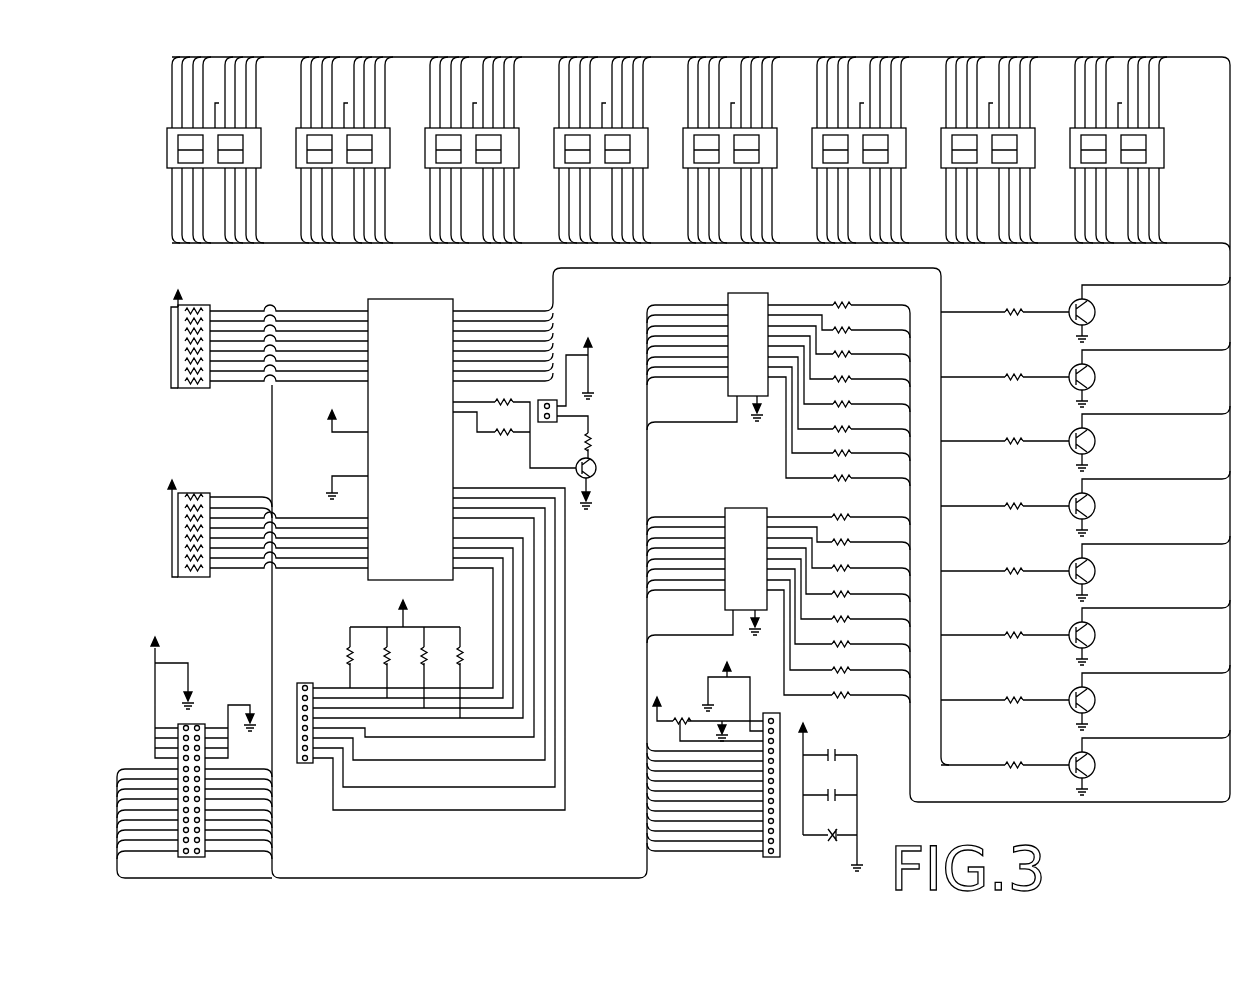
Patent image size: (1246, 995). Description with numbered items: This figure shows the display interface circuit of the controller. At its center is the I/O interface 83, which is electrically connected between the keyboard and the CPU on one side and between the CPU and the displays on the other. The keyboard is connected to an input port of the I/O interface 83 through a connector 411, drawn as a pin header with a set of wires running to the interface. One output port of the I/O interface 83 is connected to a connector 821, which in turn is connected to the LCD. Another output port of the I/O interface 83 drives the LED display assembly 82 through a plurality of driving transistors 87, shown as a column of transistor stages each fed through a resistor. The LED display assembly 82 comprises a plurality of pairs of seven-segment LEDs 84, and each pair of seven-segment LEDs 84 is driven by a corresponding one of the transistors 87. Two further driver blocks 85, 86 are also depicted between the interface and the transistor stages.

The LED display assembly 82 is at (855, 51).
The seven-segment LEDs 84 is at (643, 138).
The I/O interface 83 is at (418, 303).
The driver circuit 85 is at (770, 298).
The driver circuit 86 is at (752, 508).
The driving transistors 87 is at (1063, 299).
The connector 411 is at (297, 735).
The connector 821 is at (777, 753).